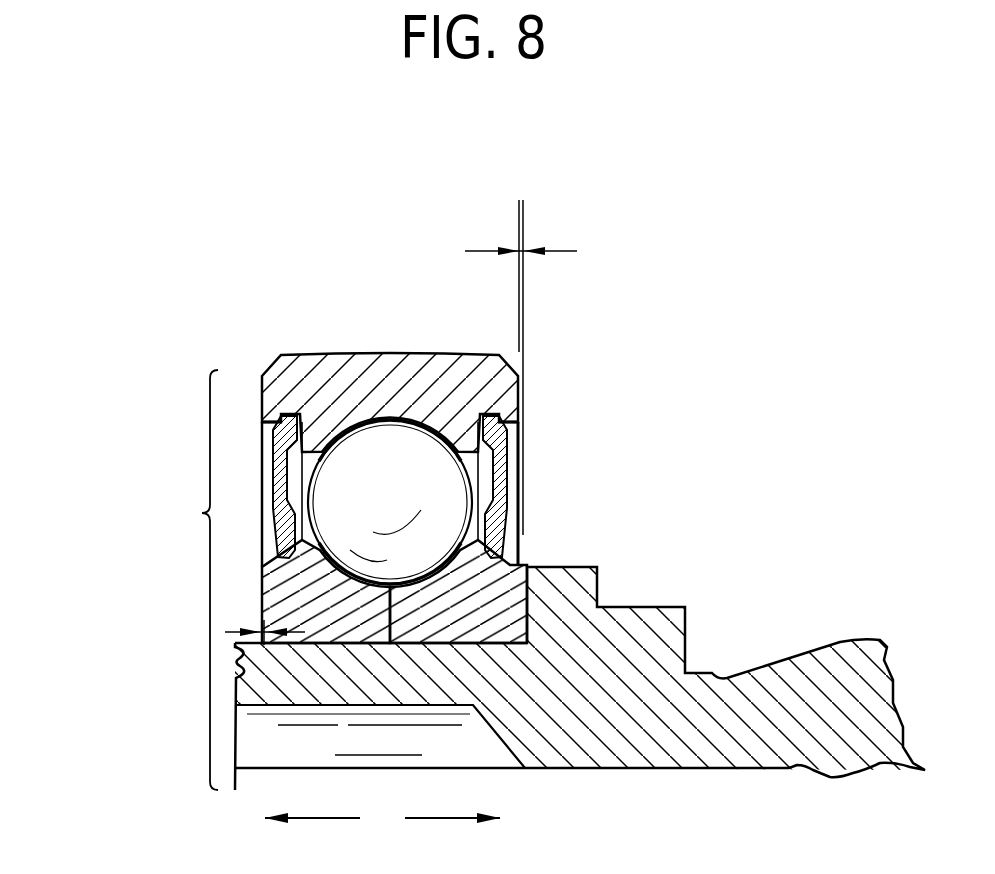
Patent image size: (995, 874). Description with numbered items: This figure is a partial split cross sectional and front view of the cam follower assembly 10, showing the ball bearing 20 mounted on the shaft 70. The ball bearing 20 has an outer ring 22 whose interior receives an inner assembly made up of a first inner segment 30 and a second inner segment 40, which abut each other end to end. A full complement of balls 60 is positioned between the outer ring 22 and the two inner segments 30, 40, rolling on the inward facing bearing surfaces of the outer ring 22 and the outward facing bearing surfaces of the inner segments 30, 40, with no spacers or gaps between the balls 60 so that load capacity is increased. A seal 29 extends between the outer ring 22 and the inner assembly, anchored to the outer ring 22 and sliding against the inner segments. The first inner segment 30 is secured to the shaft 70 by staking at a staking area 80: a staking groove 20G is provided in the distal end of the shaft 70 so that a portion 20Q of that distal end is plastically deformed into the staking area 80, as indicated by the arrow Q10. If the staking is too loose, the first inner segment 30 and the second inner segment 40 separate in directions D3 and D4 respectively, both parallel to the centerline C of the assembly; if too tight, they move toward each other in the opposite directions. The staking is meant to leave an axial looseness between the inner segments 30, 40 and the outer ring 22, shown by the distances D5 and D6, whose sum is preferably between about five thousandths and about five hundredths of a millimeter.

The cam follower assembly 10 is at (178, 410).
The ball bearing 20 is at (181, 514).
The outer ring 22 is at (416, 362).
The seal 29 is at (268, 472).
The first inner segment 30 is at (265, 580).
The second inner segment 40 is at (490, 585).
The balls 60 is at (365, 457).
The shaft 70 is at (650, 572).
The staking area 80 is at (284, 652).
The arrow Q10 is at (222, 641).
The portion of the distal end 20Q is at (220, 653).
The staking groove 20G is at (218, 668).
The direction D3 is at (322, 819).
The direction D4 is at (437, 819).
The distance D5 is at (480, 250).
The distance D6 is at (237, 631).
The centerline C is at (640, 770).